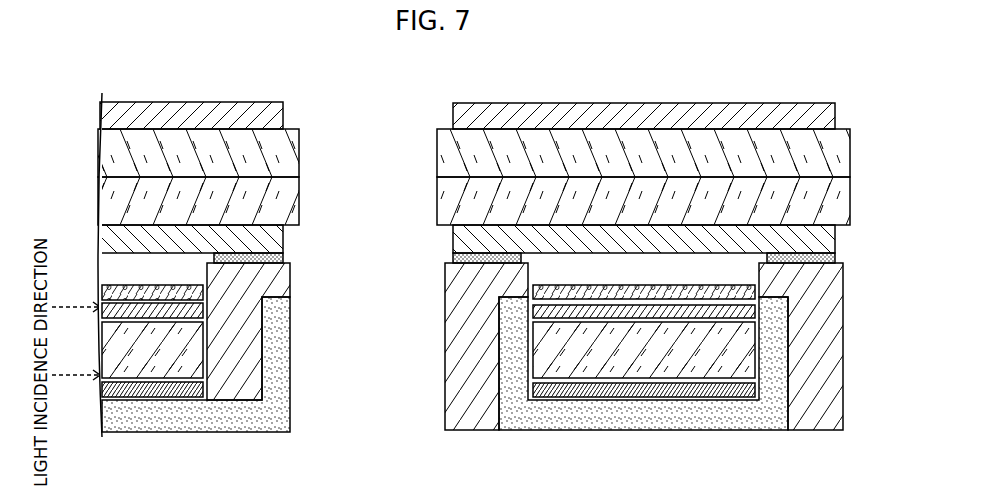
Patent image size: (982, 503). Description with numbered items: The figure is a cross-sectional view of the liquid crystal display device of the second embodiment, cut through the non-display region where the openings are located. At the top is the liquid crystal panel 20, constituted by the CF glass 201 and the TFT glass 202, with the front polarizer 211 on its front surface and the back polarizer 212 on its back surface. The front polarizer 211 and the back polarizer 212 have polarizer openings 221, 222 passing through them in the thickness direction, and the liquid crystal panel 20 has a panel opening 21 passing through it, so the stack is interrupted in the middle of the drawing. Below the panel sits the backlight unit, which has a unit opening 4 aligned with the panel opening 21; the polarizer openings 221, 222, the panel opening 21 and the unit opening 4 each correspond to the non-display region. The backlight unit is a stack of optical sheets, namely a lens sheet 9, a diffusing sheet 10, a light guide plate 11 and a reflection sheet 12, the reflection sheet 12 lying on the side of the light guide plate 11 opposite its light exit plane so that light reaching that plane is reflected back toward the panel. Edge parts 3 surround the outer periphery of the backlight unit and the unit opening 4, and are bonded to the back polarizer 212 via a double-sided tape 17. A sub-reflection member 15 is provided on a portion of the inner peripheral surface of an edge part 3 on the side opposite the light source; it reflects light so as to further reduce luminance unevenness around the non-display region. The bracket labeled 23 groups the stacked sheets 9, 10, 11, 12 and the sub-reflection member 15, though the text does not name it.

The edge part 3 is at (473, 417).
The unit opening 4 is at (368, 408).
The lens sheet 9 is at (742, 292).
The diffusing sheet 10 is at (755, 310).
The light guide plate 11 is at (740, 350).
The reflection sheet 12 is at (712, 392).
The sub-reflection member 15 is at (772, 417).
The double-sided tape 17 is at (836, 258).
The liquid crystal panel 20 is at (691, 177).
The panel opening 21 is at (342, 165).
The photoelectric conversion element 23 is at (719, 367).
The CF glass 201 is at (830, 155).
The TFT glass 202 is at (830, 205).
The front polarizer 211 is at (836, 115).
The back polarizer 212 is at (836, 240).
The polarizer opening 221 is at (368, 110).
The polarizer opening 222 is at (368, 242).